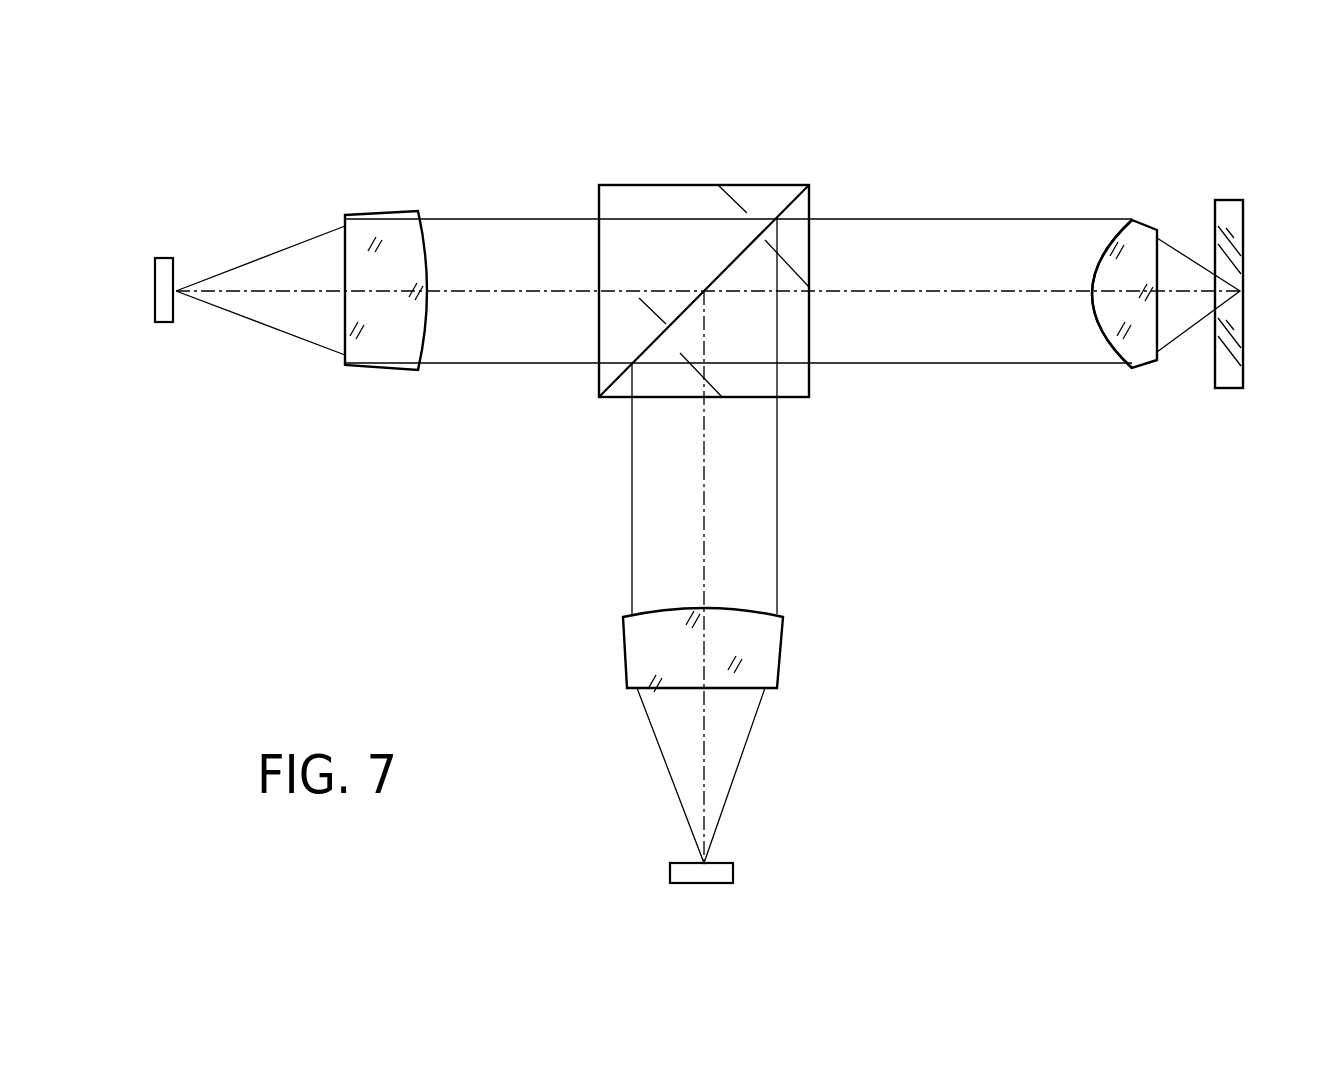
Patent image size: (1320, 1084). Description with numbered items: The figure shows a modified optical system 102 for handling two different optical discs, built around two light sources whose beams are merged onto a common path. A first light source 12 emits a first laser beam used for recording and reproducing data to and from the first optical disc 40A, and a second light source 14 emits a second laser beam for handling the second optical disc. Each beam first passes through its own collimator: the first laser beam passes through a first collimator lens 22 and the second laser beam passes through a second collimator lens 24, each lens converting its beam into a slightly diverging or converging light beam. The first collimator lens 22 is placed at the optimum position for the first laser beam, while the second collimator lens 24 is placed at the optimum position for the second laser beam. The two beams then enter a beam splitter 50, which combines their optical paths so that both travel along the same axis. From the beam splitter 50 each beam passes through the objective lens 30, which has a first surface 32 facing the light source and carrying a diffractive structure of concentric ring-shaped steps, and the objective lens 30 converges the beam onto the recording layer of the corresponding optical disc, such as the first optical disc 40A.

The modified optical system 102 is at (819, 135).
The first light source 12 is at (166, 257).
The first collimator lens 22 is at (382, 210).
The beam splitter 50 is at (665, 195).
The objective lens 30 is at (1140, 220).
The first surface 32 is at (1107, 343).
The first optical disc 40A is at (1228, 389).
The second collimator lens 24 is at (640, 648).
The second light source 14 is at (728, 872).